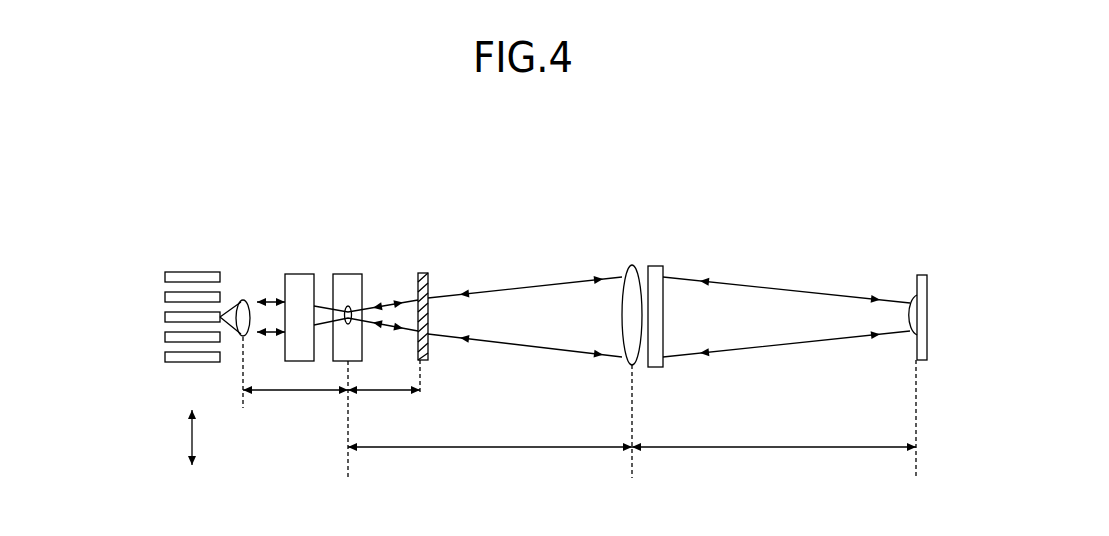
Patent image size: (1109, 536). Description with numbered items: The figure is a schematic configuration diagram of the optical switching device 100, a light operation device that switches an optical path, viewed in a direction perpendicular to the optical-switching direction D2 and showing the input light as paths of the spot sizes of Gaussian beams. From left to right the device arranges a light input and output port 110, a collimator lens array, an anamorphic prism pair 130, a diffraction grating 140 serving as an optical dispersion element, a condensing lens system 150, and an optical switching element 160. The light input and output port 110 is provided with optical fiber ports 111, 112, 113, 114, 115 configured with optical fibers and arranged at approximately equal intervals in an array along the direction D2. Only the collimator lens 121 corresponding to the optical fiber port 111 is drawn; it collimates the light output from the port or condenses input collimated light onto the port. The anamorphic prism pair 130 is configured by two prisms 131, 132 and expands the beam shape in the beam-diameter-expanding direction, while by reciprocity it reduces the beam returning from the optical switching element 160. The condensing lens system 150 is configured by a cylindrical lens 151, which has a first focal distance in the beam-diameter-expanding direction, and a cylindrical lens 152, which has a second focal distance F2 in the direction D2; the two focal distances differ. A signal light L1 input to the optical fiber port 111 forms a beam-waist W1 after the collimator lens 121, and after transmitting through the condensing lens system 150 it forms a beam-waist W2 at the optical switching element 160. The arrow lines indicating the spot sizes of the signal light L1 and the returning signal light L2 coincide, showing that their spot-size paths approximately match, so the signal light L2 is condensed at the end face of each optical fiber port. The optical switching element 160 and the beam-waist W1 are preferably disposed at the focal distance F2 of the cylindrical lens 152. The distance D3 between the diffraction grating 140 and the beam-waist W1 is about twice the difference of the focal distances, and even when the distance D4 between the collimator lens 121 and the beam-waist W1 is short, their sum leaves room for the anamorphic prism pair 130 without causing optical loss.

The optical switching device 100 is at (782, 196).
The light input and output port 110 is at (193, 252).
The optical fiber port 111 is at (165, 317).
The optical fiber port 112 is at (165, 276).
The optical fiber port 113 is at (165, 296).
The optical fiber port 114 is at (165, 338).
The optical fiber port 115 is at (165, 357).
The collimator lens 121 is at (245, 300).
The anamorphic prism pair 130 is at (328, 210).
The prism 131 is at (297, 274).
The prism 132 is at (349, 274).
The diffraction grating 140 is at (423, 273).
The condensing lens system 150 is at (652, 196).
The cylindrical lens 151 is at (656, 266).
The cylindrical lens 152 is at (630, 265).
The optical switching element 160 is at (918, 275).
The beam-waist W1 is at (349, 306).
The beam-waist W2 is at (908, 338).
The signal light L1 is at (517, 288).
The signal light L2 is at (525, 345).
The direction D2 is at (194, 437).
The distance D3 is at (384, 393).
The distance D4 is at (295, 393).
The focal distance F2 is at (493, 450).